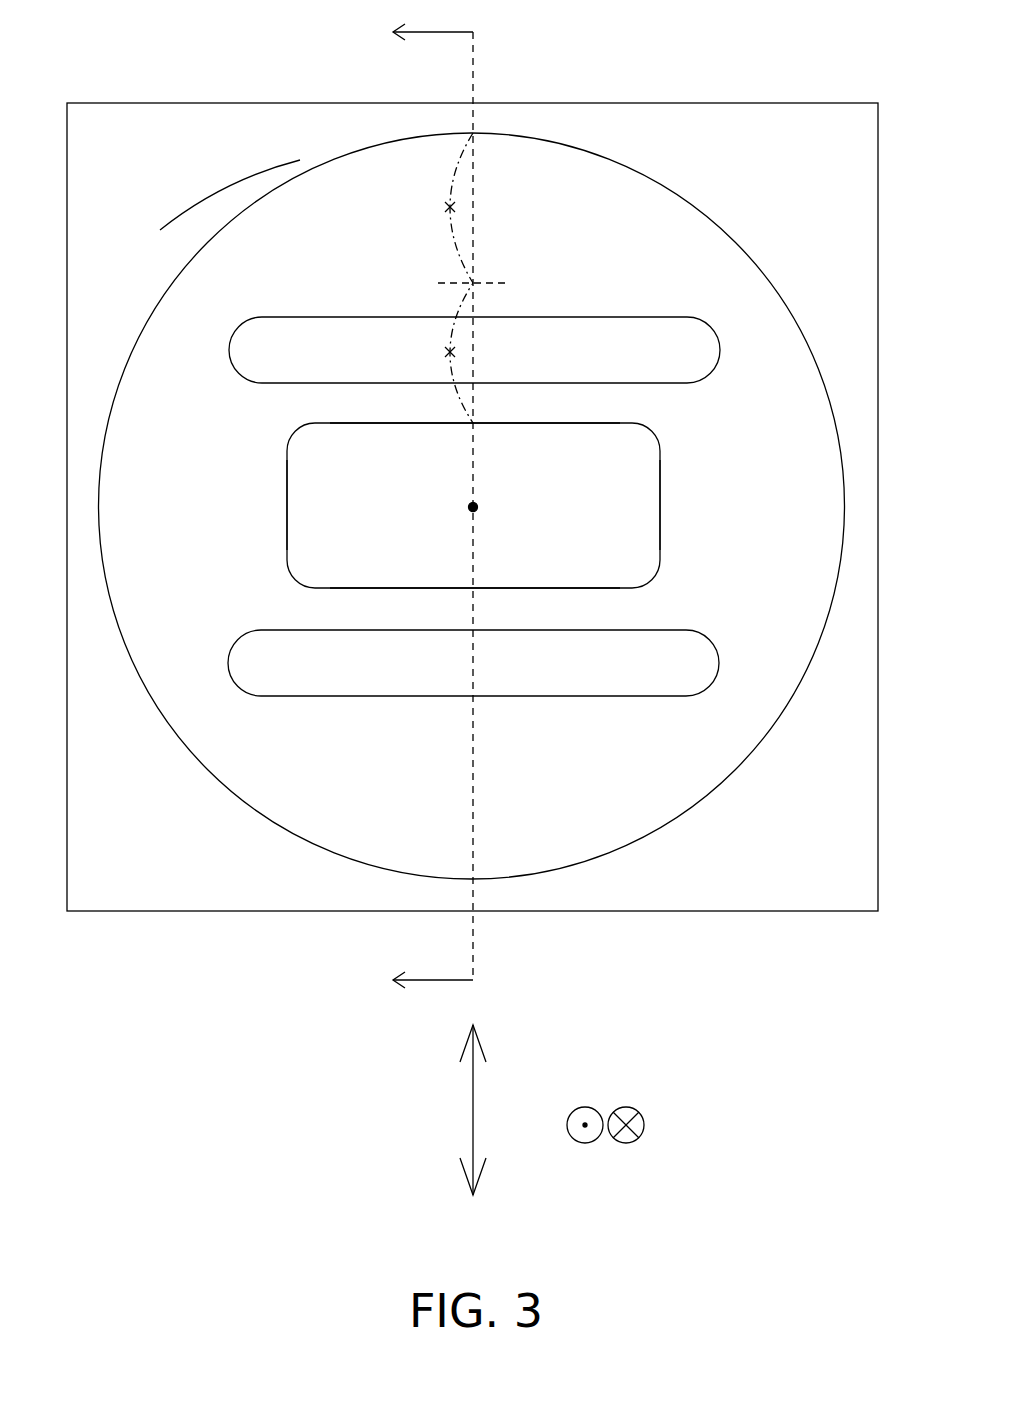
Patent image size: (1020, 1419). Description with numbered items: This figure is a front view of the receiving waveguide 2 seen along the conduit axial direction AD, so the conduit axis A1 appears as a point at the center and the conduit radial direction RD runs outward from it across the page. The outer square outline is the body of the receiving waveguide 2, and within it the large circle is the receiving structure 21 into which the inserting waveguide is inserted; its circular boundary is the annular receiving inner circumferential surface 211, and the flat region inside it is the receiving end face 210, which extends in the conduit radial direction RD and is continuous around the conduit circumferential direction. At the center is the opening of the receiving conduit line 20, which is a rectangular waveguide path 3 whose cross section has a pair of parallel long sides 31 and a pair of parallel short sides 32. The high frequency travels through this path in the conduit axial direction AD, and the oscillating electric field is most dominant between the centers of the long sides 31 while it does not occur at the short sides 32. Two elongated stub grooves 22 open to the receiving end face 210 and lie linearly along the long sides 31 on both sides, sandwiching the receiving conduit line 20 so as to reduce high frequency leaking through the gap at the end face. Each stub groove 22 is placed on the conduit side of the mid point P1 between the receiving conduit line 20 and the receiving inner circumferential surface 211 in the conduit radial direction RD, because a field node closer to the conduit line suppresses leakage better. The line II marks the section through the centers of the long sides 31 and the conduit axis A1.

The receiving waveguide 2 is at (677, 101).
The receiving structure 21 is at (266, 195).
The receiving inner circumferential surface 211 is at (210, 250).
The receiving end face 210 is at (323, 243).
The stub groove 22 is at (572, 365).
The receiving conduit line 20 is at (578, 501).
The rectangular waveguide path 3 is at (473, 505).
The long side 31 is at (382, 425).
The short side 32 is at (288, 510).
The conduit axis A1 is at (478, 509).
The mid point P1 is at (488, 278).
The conduit radial direction RD is at (488, 1110).
The conduit axial direction AD is at (605, 1110).
The line II- II is at (433, 513).